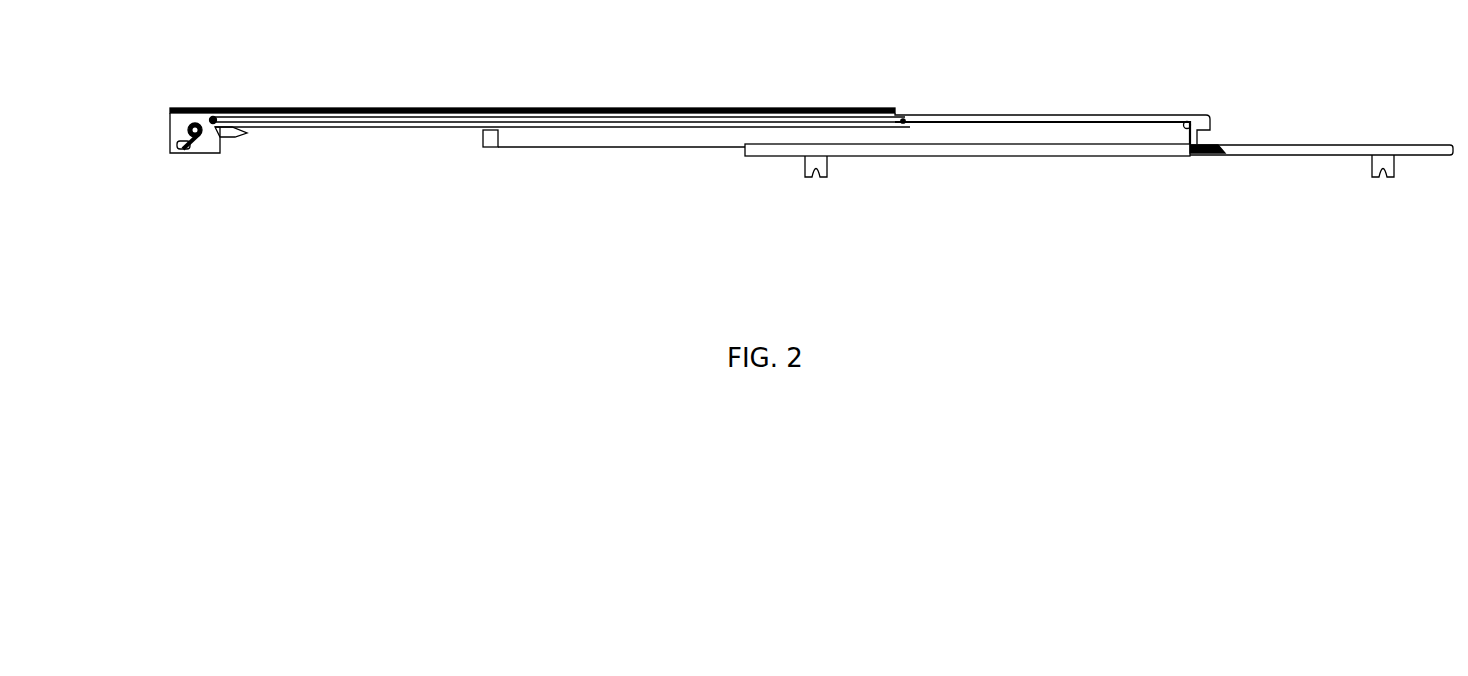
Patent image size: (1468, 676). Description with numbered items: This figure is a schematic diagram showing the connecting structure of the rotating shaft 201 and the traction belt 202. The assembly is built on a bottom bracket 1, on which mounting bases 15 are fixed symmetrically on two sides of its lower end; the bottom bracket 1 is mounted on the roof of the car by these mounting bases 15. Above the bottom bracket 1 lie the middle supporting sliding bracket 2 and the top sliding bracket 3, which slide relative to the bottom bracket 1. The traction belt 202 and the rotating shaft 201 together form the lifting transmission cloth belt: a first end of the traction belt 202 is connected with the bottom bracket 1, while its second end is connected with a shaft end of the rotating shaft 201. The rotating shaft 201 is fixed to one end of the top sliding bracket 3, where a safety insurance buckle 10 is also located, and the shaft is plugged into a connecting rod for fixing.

The bottom bracket 1 is at (1272, 155).
The middle supporting sliding bracket 2 is at (1087, 113).
The top sliding bracket 3 is at (315, 127).
The safety insurance buckle 10 is at (186, 150).
The mounting base 15 is at (823, 170).
The rotating shaft 201 is at (199, 124).
The traction belt 202 is at (392, 117).